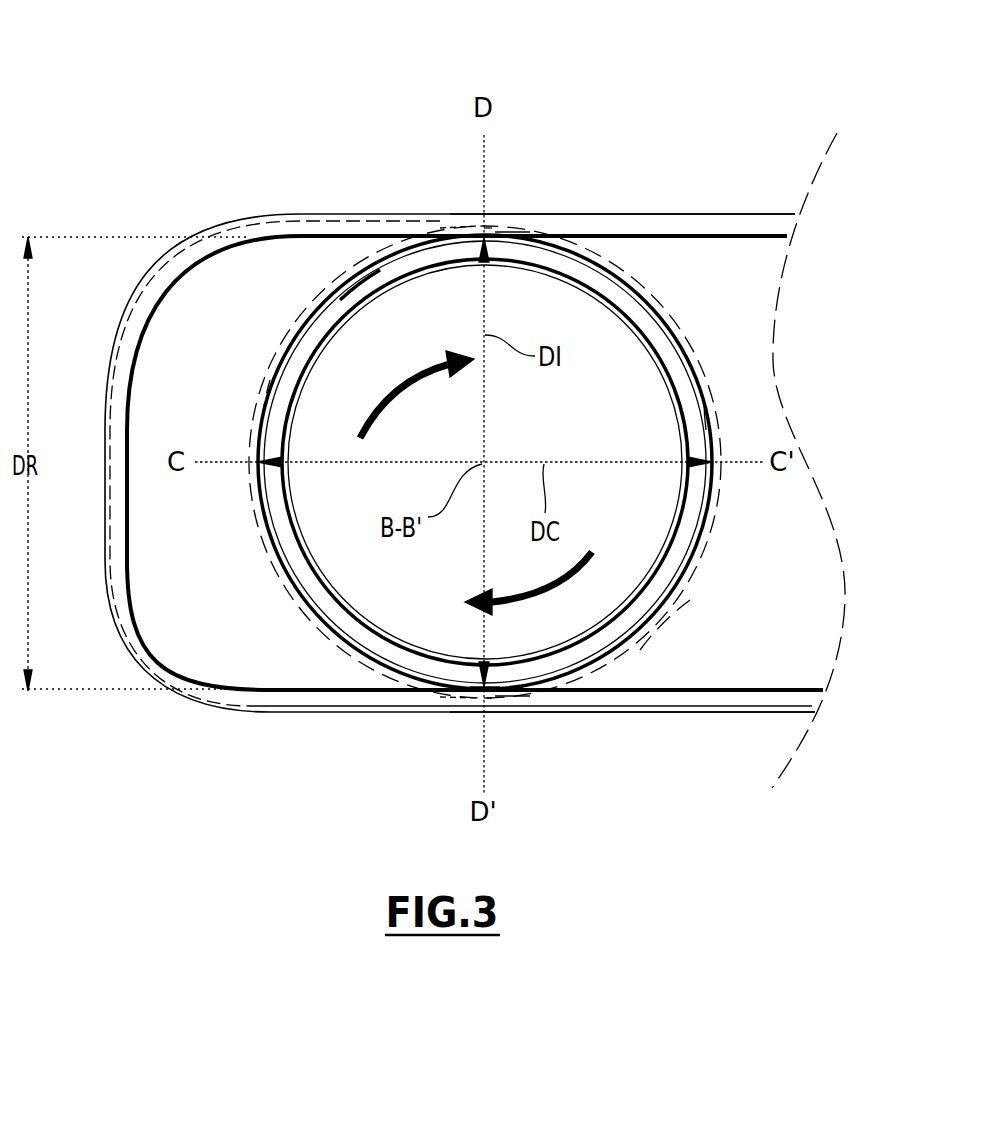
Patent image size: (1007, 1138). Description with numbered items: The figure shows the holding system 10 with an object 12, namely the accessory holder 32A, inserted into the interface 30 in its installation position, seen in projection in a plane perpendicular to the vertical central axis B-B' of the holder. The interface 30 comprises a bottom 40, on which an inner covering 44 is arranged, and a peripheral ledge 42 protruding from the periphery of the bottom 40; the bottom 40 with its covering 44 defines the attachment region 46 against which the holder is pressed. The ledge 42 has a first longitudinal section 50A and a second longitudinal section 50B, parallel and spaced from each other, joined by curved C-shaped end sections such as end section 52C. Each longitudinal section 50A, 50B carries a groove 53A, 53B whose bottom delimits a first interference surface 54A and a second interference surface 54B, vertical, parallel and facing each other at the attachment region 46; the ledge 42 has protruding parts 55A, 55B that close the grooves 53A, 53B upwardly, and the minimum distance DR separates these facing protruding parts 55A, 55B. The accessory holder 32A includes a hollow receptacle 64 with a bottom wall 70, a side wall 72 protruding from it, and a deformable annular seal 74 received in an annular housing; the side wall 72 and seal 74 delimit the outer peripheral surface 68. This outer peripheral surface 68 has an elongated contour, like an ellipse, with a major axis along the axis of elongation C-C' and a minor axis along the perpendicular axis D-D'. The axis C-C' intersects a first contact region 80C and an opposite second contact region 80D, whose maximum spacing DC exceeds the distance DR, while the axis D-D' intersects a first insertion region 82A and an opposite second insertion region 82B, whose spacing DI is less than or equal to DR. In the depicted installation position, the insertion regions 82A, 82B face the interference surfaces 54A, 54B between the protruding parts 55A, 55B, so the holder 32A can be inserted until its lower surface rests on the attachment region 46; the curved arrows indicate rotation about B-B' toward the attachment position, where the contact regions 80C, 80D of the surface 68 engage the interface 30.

The holding system 10 is at (140, 126).
The object 12 is at (797, 366).
The interface 30 is at (208, 742).
The accessory holder 32A is at (684, 619).
The bottom 40 is at (738, 300).
The peripheral ledge 42 is at (748, 194).
The inner covering 44 is at (198, 310).
The attachment region 46 is at (360, 257).
The first longitudinal section 50A is at (640, 713).
The second longitudinal section 50B is at (683, 213).
The end section 52C is at (107, 398).
The groove 53A is at (495, 700).
The groove 53B is at (492, 227).
The first interference surface 54A is at (477, 697).
The second interference surface 54B is at (473, 227).
The protruding part 55A is at (430, 680).
The protruding part 55B is at (427, 234).
The hollow receptacle 64 is at (312, 305).
The outer peripheral surface 68 is at (710, 385).
The bottom wall 70 is at (485, 462).
The side wall 72 is at (316, 592).
The deformable annular seal 74 is at (256, 497).
The first contact region 80C is at (715, 430).
The second contact region 80D is at (250, 442).
The first insertion region 82A is at (508, 698).
The second insertion region 82B is at (507, 233).